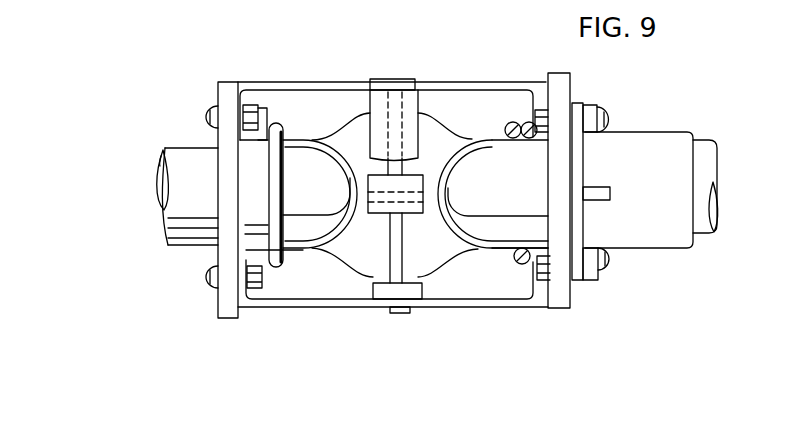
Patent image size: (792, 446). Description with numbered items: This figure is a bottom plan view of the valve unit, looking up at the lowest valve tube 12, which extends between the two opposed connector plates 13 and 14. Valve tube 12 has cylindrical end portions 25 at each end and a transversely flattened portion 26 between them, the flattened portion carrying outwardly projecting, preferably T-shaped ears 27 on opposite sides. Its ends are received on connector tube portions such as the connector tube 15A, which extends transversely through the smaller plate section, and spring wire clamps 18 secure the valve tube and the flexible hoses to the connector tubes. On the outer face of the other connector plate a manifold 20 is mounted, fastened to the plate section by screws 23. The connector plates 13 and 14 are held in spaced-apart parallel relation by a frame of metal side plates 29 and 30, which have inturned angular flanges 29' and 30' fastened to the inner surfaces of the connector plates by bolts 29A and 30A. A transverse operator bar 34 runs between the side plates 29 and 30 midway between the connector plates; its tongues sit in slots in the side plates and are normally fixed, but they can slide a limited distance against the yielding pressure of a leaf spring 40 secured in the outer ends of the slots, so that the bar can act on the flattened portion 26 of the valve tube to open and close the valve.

The valve tube 12 is at (331, 260).
The connector plate 13 is at (146, 0).
The connector plate 14 is at (258, 2).
The connector tube portion 15A is at (172, 204).
The spring wire clamp 18 is at (284, 133).
The manifold 20 is at (682, 135).
The screw 23 is at (606, 113).
The cylindrical end portion 25 is at (319, 196).
The transversely flattened portion 26 is at (438, 131).
The ear 27 is at (410, 213).
The side plate 29 is at (392, 91).
The inturned angular flange 29' is at (430, 95).
The bolt 29A is at (206, 117).
The side plate 30 is at (393, 296).
The inturned angular flange 30' is at (404, 295).
The bolt 30A is at (207, 278).
The operator bar 34 is at (393, 240).
The leaf spring 40 is at (418, 98).